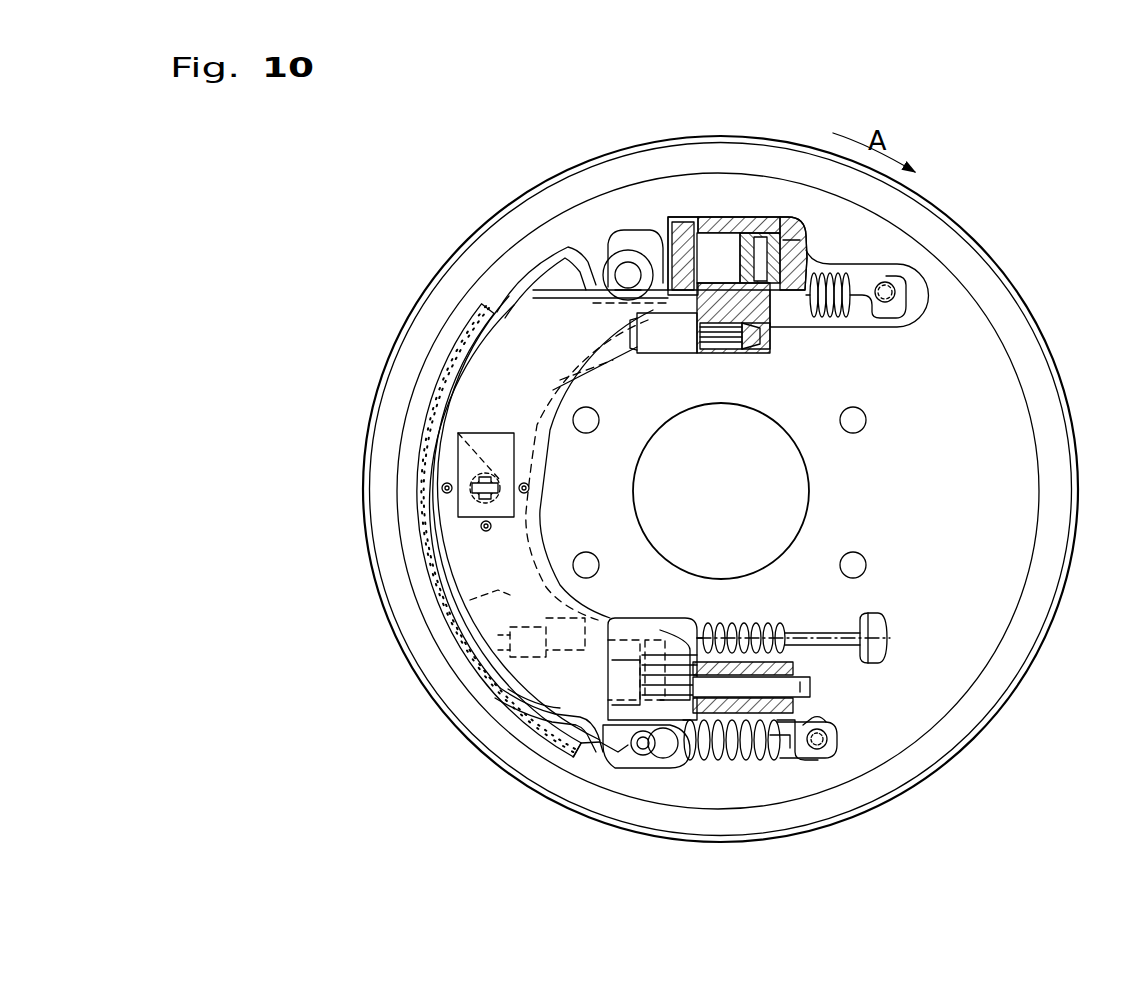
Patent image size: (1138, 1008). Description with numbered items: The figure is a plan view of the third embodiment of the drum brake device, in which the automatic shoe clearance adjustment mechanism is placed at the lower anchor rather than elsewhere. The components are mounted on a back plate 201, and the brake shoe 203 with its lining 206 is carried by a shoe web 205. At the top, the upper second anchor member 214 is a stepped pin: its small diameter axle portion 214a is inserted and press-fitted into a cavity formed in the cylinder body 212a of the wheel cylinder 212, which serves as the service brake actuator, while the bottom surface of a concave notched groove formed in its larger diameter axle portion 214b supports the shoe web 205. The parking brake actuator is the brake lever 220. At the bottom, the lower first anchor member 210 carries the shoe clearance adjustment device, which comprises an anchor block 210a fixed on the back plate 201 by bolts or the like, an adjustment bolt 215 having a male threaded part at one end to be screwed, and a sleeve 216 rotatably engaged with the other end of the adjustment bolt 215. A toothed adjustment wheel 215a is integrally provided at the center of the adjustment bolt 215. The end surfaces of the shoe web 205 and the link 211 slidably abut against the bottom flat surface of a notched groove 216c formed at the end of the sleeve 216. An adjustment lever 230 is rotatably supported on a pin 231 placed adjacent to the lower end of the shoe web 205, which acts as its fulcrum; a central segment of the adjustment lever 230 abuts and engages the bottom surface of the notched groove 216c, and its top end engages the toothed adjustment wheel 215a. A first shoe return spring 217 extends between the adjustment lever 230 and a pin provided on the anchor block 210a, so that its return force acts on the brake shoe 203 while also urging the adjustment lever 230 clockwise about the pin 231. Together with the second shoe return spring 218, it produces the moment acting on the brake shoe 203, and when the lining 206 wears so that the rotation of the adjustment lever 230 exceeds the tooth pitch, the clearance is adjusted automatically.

The back plate 201 is at (995, 675).
The brake shoe 203 is at (420, 580).
The shoe web 205 is at (593, 353).
The lining 206 is at (543, 727).
The lower first anchor member 210 is at (833, 710).
The anchor block 210a is at (818, 691).
The link 211 is at (553, 733).
The wheel cylinder 212 is at (698, 213).
The cylinder body 212a is at (790, 257).
The upper second anchor member 214 is at (793, 472).
The small diameter axle portion 214a is at (725, 345).
The larger diameter axle portion 214b is at (668, 345).
The adjustment bolt 215 is at (715, 760).
The toothed adjustment wheel 215a is at (692, 765).
The sleeve 216 is at (677, 753).
The notched groove 216c is at (625, 632).
The first shoe return spring 217 is at (755, 758).
The second shoe return spring 218 is at (842, 292).
The brake lever 220 is at (555, 470).
The adjustment lever 230 is at (663, 632).
The pin 231 is at (643, 752).